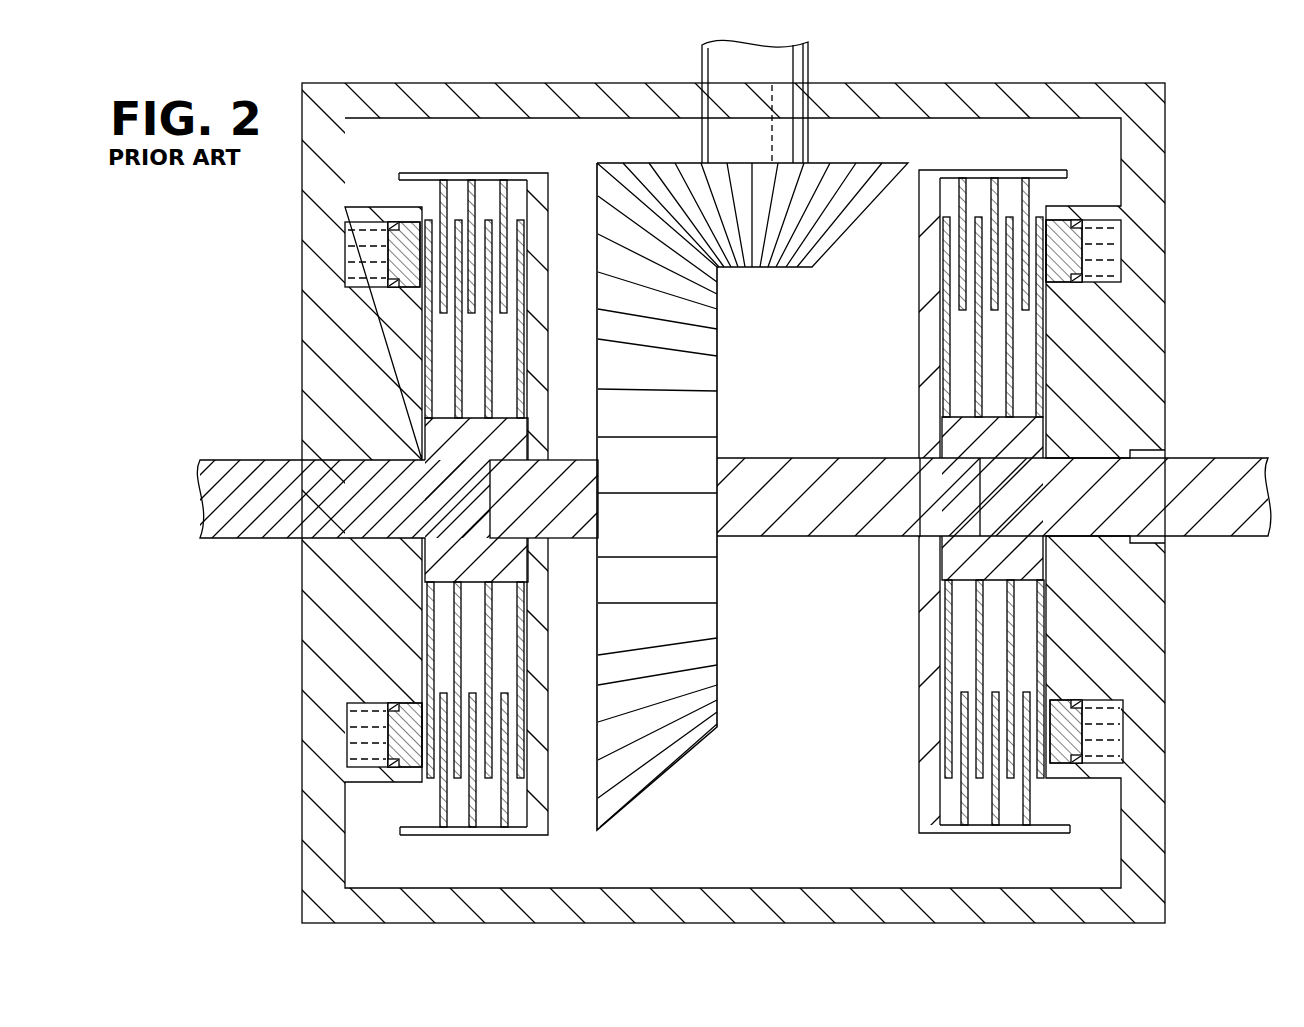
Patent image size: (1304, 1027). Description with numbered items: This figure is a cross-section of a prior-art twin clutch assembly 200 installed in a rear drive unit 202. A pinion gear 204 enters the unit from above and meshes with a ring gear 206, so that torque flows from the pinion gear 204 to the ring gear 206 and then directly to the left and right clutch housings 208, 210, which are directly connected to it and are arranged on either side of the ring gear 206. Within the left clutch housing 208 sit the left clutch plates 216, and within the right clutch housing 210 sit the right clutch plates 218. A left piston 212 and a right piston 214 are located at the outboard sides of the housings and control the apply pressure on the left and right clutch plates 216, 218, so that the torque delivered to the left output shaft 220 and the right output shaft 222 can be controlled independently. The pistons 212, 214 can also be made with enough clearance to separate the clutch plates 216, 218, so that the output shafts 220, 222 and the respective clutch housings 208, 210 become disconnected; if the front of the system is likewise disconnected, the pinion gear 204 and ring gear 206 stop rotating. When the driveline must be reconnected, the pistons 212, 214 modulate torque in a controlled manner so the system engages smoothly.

The twin clutch assembly 200 is at (1078, 843).
The rear drive unit 202 is at (541, 84).
The pinion gear 204 is at (843, 175).
The ring gear 206 is at (667, 773).
The left clutch housing 208 is at (440, 174).
The right clutch housing 210 is at (1005, 170).
The left piston 212 is at (388, 250).
The right piston 214 is at (1063, 253).
The left clutch plates 216 is at (428, 808).
The right clutch plates 218 is at (1043, 803).
The left output shaft 220 is at (252, 540).
The right output shaft 222 is at (1208, 457).